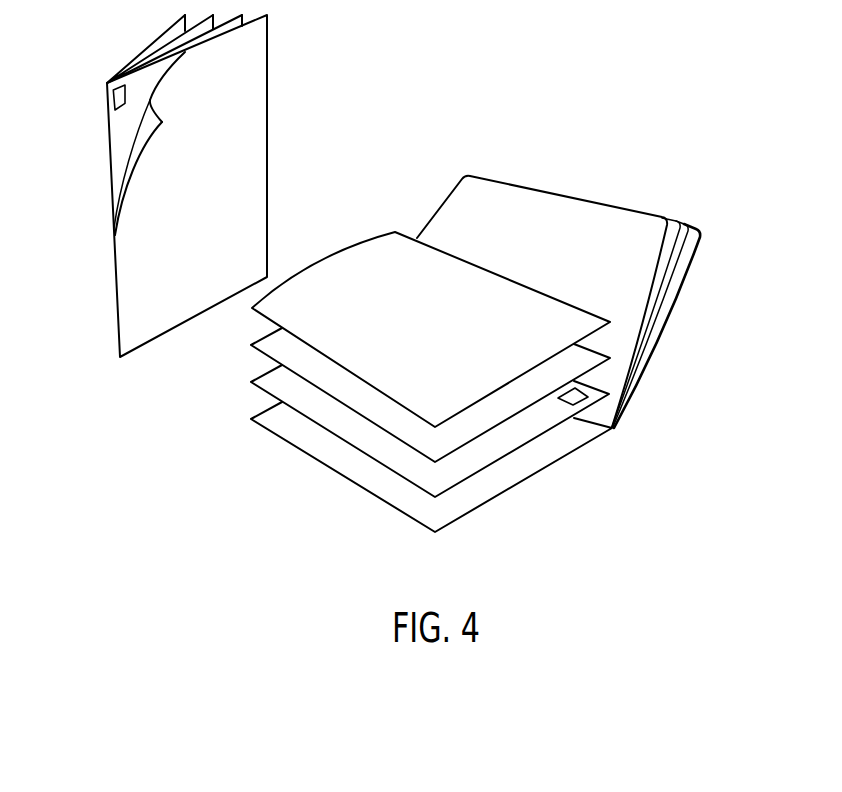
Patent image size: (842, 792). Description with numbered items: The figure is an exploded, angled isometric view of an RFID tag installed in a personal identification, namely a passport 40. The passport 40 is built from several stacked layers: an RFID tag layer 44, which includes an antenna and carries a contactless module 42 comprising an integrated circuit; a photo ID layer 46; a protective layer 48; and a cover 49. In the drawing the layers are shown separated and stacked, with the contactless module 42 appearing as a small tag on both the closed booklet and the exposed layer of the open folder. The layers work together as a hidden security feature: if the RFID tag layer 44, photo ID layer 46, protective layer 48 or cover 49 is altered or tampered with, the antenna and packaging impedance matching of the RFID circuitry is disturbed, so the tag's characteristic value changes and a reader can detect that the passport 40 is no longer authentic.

The passport 40 is at (268, 63).
The contactless module 42 is at (112, 104).
The RFID tag layer 44 is at (540, 433).
The photo ID layer 46 is at (255, 349).
The protective layer 48 is at (340, 250).
The cover 49 is at (393, 507).